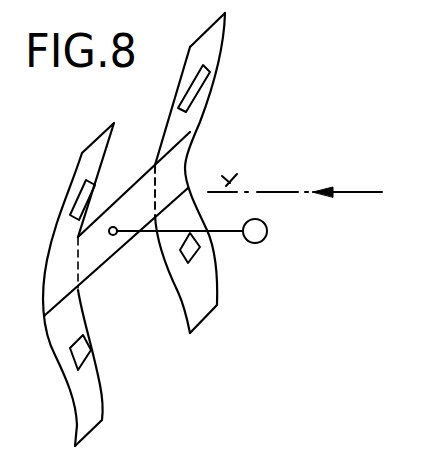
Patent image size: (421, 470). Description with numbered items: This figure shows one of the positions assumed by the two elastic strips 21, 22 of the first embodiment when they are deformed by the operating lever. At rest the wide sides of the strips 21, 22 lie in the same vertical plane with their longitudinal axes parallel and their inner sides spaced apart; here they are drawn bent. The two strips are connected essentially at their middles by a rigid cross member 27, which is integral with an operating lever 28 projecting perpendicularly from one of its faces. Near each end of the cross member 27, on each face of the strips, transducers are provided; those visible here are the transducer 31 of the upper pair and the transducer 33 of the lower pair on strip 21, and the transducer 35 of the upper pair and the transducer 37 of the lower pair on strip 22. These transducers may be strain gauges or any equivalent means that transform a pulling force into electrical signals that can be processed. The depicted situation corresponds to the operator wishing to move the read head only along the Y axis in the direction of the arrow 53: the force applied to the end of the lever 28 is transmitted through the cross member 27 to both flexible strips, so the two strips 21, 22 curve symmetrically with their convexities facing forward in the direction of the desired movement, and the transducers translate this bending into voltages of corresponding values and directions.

The strip 21 is at (90, 403).
The strip 22 is at (204, 304).
The cross member 27 is at (147, 200).
The operating lever 28 is at (255, 243).
The transducer 31 is at (205, 88).
The transducer 33 is at (178, 258).
The transducer 35 is at (72, 204).
The transducer 37 is at (91, 350).
The arrow 53 is at (345, 172).